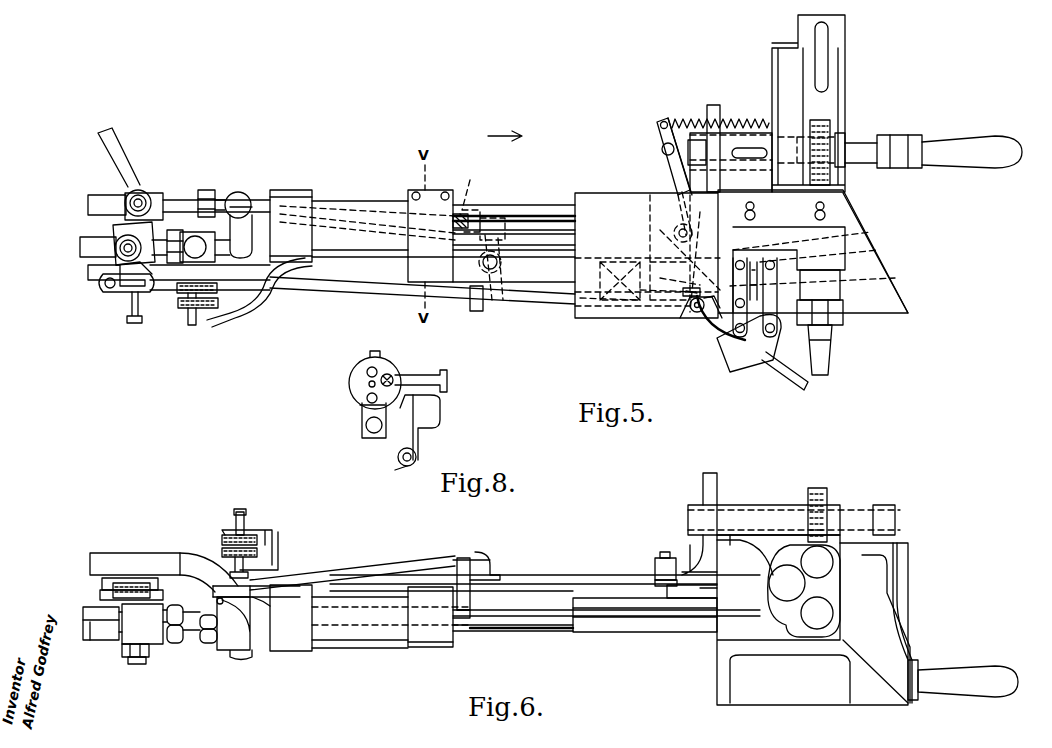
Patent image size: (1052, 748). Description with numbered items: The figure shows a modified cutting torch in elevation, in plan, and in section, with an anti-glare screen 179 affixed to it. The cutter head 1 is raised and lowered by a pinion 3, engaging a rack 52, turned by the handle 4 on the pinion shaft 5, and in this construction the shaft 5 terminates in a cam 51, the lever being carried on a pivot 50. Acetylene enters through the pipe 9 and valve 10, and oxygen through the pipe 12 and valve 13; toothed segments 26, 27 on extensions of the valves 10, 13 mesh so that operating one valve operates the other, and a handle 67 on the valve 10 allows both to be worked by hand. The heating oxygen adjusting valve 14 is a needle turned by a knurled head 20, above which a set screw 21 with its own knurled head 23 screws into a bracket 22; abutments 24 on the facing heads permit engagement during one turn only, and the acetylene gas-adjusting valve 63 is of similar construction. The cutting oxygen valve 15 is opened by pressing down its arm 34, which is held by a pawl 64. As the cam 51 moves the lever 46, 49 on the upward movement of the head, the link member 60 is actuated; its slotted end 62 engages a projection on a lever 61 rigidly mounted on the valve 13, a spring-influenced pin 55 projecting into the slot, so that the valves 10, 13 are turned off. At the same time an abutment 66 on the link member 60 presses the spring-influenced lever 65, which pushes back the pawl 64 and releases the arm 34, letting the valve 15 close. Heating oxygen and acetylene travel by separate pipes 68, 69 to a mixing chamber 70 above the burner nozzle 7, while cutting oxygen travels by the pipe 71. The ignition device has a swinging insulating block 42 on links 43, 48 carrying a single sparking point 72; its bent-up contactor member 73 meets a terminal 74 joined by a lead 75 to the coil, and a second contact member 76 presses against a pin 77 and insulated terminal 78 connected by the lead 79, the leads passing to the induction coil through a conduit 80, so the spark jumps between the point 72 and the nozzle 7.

In FIG. 5, the cutter head 1 is at (830, 90).
In FIG. 6, the cutter head 1 is at (822, 592).
In FIG. 5, the pinion 3 is at (830, 180).
In FIG. 6, the pinion 3 is at (810, 480).
In FIG. 5, the handle 4 is at (960, 150).
In FIG. 6, the handle 4 is at (965, 683).
In FIG. 5, the pinion shaft 5 is at (862, 153).
In FIG. 6, the pinion shaft 5 is at (860, 508).
In FIG. 5, the burner nozzle 7 is at (828, 365).
In FIG. 5, the acetylene pipe 9 is at (112, 198).
In FIG. 6, the acetylene pipe 9 is at (90, 622).
In FIG. 5, the acetylene valve 10 is at (142, 201).
In FIG. 6, the acetylene valve 10 is at (140, 652).
In FIG. 5, the oxygen pipe 12 is at (92, 240).
In FIG. 6, the oxygen pipe 12 is at (100, 610).
In FIG. 5, the oxygen valve 13 is at (114, 250).
In FIG. 6, the oxygen valve 13 is at (120, 648).
In FIG. 6, the heating oxygen adjusting valve 14 is at (232, 562).
In FIG. 6, the cutting oxygen valve 15 is at (255, 590).
In FIG. 6, the knurled head 20 is at (228, 548).
In FIG. 6, the set screw 21 is at (240, 512).
In FIG. 6, the bracket 22 is at (278, 540).
In FIG. 6, the knurled head 23 is at (236, 535).
In FIG. 6, the abutments 24 is at (248, 548).
In FIG. 5, the toothed segment 26 is at (170, 193).
In FIG. 5, the toothed segment 27 is at (205, 190).
In FIG. 5, the arm 34 is at (348, 210).
In FIG. 6, the arm 34 is at (362, 568).
In FIG. 5, the swinging block 42 is at (758, 348).
In FIG. 5, the link 43 is at (740, 300).
In FIG. 5, the lever 46 is at (690, 312).
In FIG. 6, the lever 46 is at (695, 592).
In FIG. 5, the link 48 is at (752, 290).
In FIG. 5, the lever 49 is at (672, 175).
In FIG. 6, the lever 49 is at (667, 586).
In FIG. 5, the pivot pin 50 is at (660, 149).
In FIG. 6, the pivot pin 50 is at (660, 565).
In FIG. 5, the cam 51 is at (700, 140).
In FIG. 6, the cam 51 is at (700, 548).
In FIG. 5, the rack 52 is at (742, 118).
In FIG. 5, the spring-influenced pin 55 is at (135, 322).
In FIG. 5, the link member 60 is at (540, 280).
In FIG. 8, the link member 60 is at (400, 462).
In FIG. 6, the link member 60 is at (540, 580).
In FIG. 5, the lever 61 is at (112, 286).
In FIG. 5, the slotted end 62 is at (135, 278).
In FIG. 5, the acetylene gas-adjusting valve 63 is at (186, 312).
In FIG. 5, the pawl 64 is at (470, 195).
In FIG. 8, the pawl 64 is at (425, 375).
In FIG. 6, the pawl 64 is at (462, 565).
In FIG. 5, the spring-influenced lever 65 is at (495, 290).
In FIG. 8, the spring-influenced lever 65 is at (437, 412).
In FIG. 6, the spring-influenced lever 65 is at (490, 560).
In FIG. 5, the abutment 66 is at (475, 311).
In FIG. 8, the abutment 66 is at (407, 466).
In FIG. 5, the handle 67 is at (118, 156).
In FIG. 6, the handle 67 is at (130, 588).
In FIG. 5, the oxygen pipe 68 is at (532, 216).
In FIG. 8, the oxygen pipe 68 is at (369, 384).
In FIG. 5, the acetylene pipe 69 is at (565, 240).
In FIG. 8, the acetylene pipe 69 is at (368, 398).
In FIG. 5, the mixing chamber 70 is at (825, 303).
In FIG. 5, the cutting oxygen pipe 71 is at (510, 205).
In FIG. 8, the cutting oxygen pipe 71 is at (368, 370).
In FIG. 6, the cutting oxygen pipe 71 is at (500, 620).
In FIG. 5, the sparking point 72 is at (790, 375).
In FIG. 5, the contactor member 73 is at (712, 300).
In FIG. 5, the terminal 74 is at (690, 286).
In FIG. 5, the lead 75 is at (650, 300).
In FIG. 5, the contact member 76 is at (895, 278).
In FIG. 5, the pin 77 is at (870, 232).
In FIG. 5, the insulated terminal 78 is at (878, 250).
In FIG. 5, the lead 79 is at (612, 306).
In FIG. 5, the conduit 80 is at (95, 275).
In FIG. 8, the conduit 80 is at (366, 430).
In FIG. 6, the conduit 80 is at (530, 630).
In FIG. 5, the anti-glare screen 179 is at (905, 307).
In FIG. 6, the anti-glare screen 179 is at (900, 596).